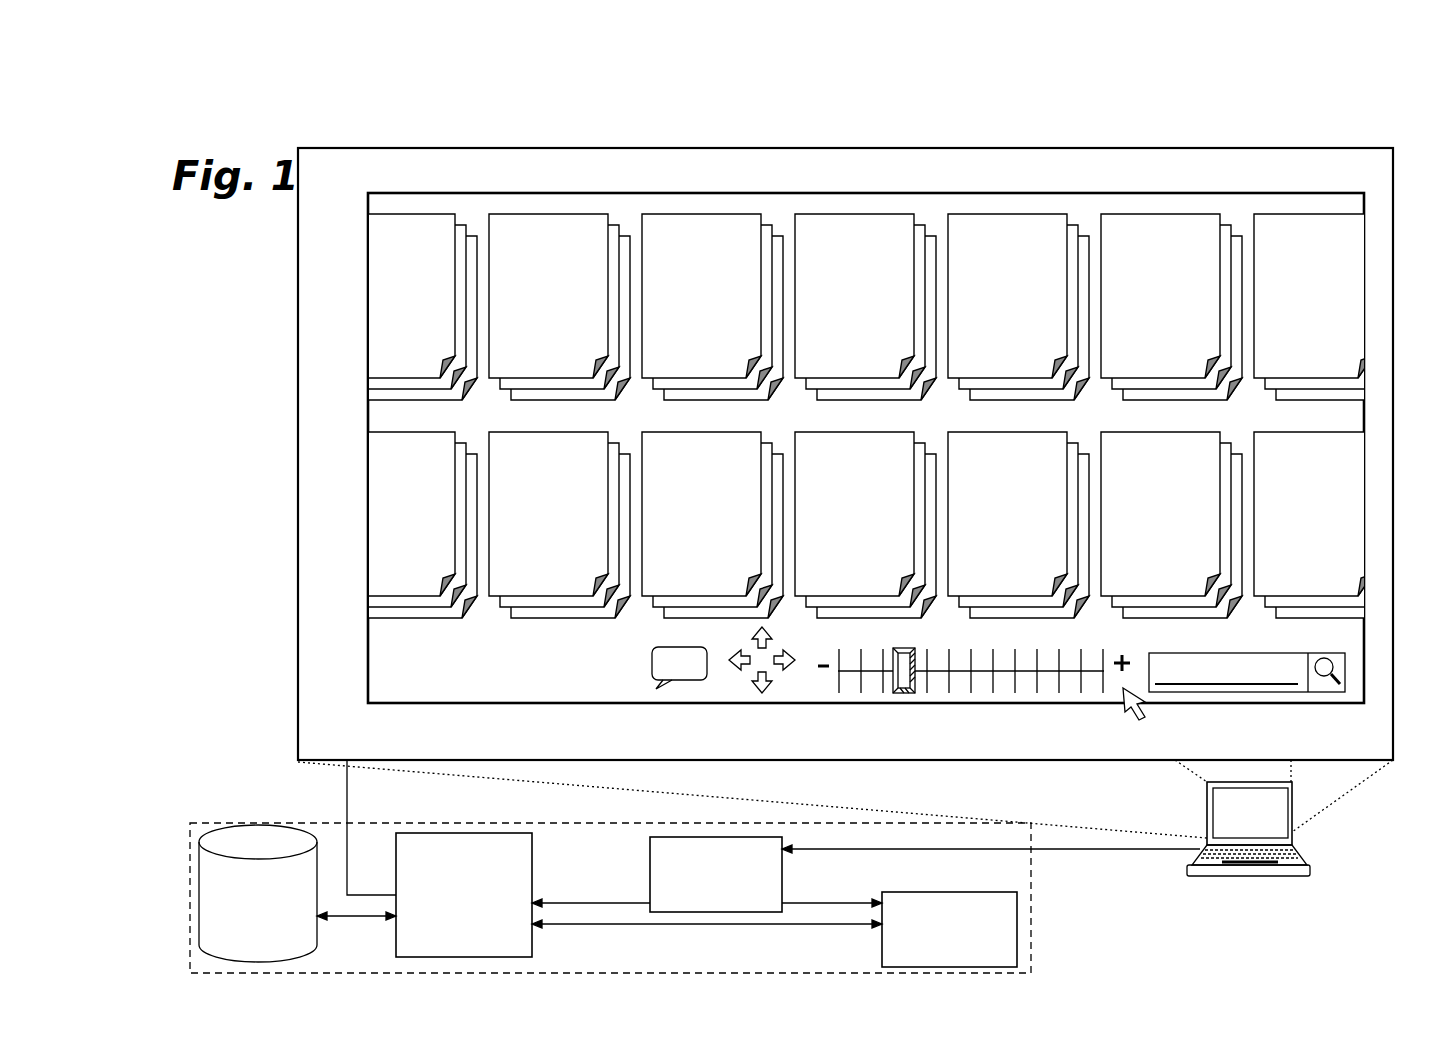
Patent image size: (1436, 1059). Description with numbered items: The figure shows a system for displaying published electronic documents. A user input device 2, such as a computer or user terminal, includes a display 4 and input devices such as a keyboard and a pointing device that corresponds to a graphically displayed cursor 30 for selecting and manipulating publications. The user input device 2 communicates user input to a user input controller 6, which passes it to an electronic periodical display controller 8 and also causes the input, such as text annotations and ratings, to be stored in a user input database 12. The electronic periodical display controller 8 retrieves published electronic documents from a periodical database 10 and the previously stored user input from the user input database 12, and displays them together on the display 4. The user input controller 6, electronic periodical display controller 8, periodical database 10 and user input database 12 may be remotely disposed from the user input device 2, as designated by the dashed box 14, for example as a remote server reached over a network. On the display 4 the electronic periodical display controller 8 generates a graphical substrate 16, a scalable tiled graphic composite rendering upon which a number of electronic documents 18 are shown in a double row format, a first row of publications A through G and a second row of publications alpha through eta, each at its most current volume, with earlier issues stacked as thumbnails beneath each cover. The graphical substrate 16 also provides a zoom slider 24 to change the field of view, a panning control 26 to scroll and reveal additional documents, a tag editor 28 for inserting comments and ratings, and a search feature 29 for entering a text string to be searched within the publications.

The user input device 2 is at (1200, 876).
The display 4 is at (298, 632).
The user input controller 6 is at (782, 866).
The electronic periodical display controller 8 is at (532, 866).
The periodical database 10 is at (317, 935).
The user input database 12 is at (1017, 915).
The dashed box 14 is at (1031, 868).
The graphical substrate 16 is at (368, 678).
The electronic documents 18 is at (850, 416).
The zoom slider 24 is at (907, 693).
The panning control 26 is at (762, 693).
The tag editor 28 is at (692, 672).
The search feature 29 is at (1248, 692).
The cursor 30 is at (1133, 716).